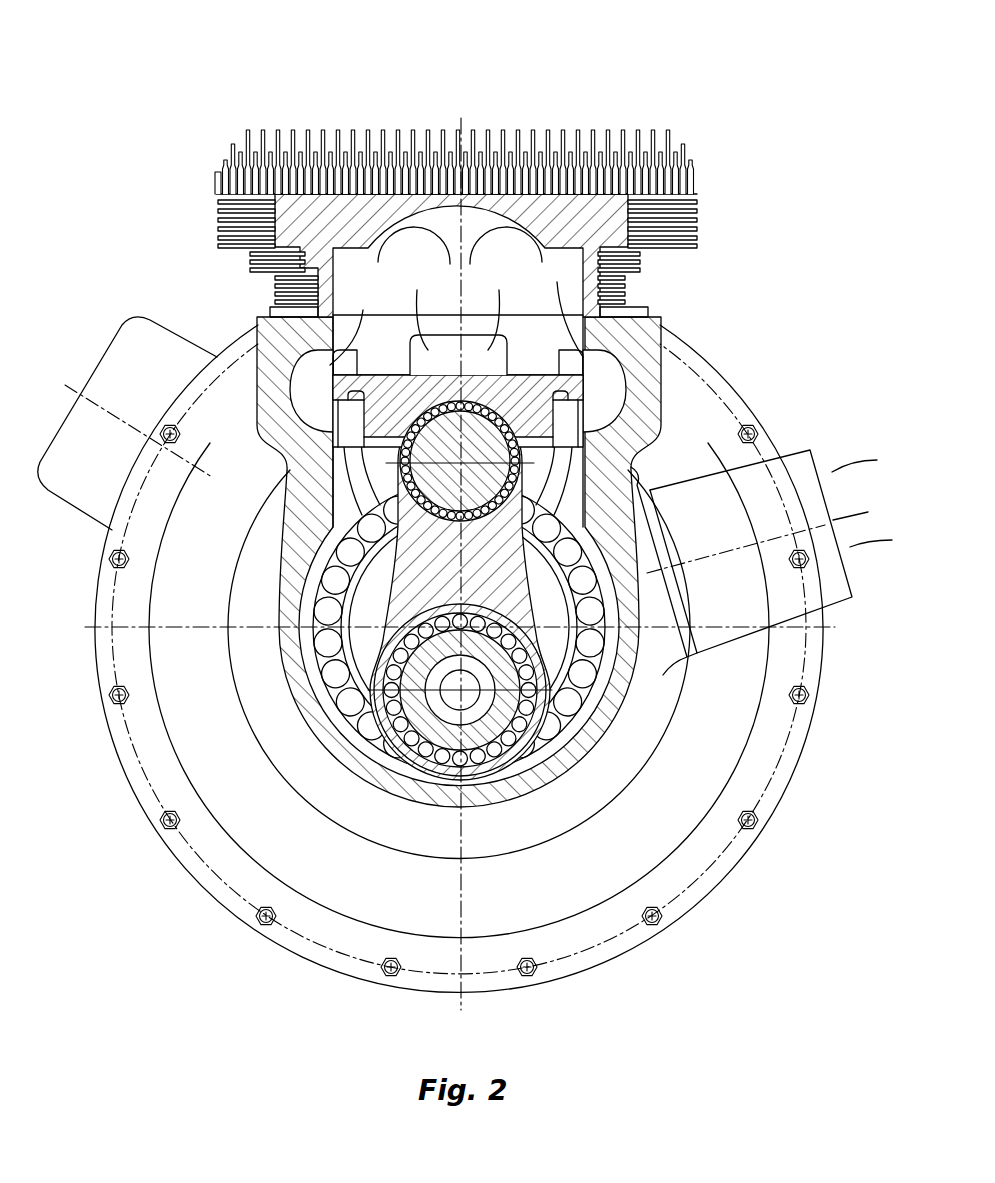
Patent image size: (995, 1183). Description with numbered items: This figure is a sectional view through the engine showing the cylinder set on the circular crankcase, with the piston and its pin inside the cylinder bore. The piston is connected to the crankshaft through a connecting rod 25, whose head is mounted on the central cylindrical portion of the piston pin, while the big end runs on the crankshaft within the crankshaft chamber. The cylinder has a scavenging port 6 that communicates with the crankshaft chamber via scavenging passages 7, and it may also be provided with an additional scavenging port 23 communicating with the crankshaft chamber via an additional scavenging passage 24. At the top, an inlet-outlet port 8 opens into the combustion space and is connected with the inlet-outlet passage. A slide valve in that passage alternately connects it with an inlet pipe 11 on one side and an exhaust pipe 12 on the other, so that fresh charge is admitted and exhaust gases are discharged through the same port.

The scavenging port 6 is at (567, 356).
The scavenging passages 7 is at (610, 400).
The inlet-outlet port 8 is at (437, 333).
The inlet pipe 11 is at (787, 480).
The exhaust pipe 12 is at (110, 383).
The additional scavenging port 23 is at (275, 307).
The additional scavenging passage 24 is at (257, 365).
The connecting rod 25 is at (627, 470).